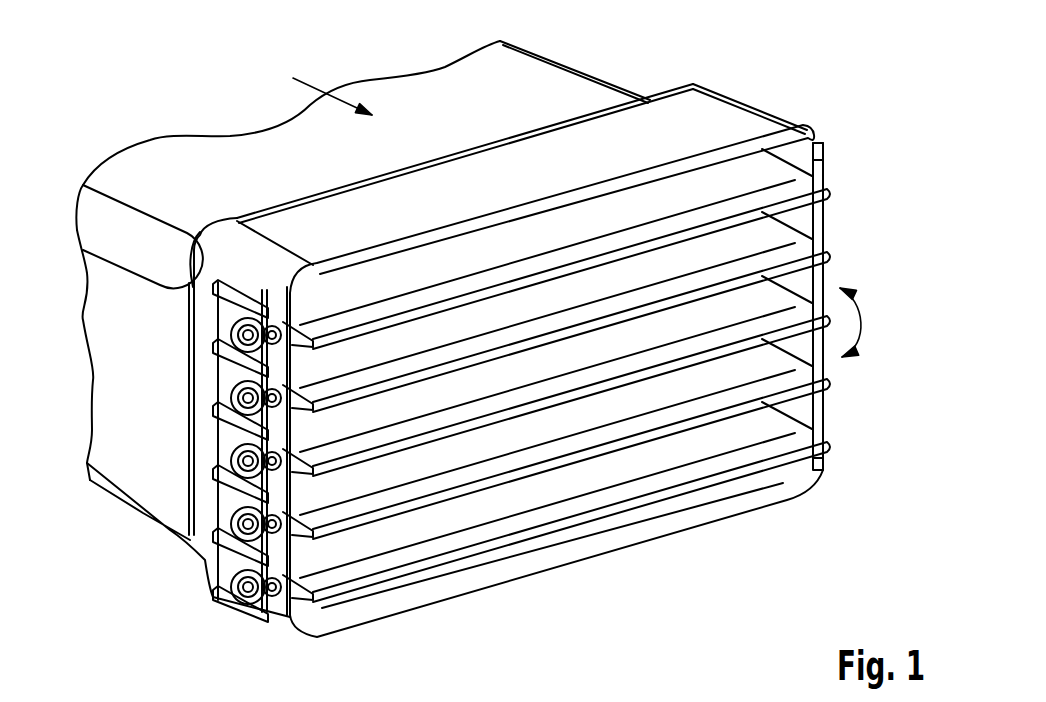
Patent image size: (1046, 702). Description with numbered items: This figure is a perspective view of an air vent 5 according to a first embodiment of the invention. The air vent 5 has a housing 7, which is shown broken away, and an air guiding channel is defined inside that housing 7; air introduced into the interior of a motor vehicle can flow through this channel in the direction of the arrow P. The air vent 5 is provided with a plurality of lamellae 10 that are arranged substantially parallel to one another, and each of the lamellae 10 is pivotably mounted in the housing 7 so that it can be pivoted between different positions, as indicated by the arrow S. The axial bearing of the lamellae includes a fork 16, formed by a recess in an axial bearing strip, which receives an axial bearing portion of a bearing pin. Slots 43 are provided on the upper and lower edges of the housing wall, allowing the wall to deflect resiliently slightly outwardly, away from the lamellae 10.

The air vent 5 is at (551, 597).
The housing 7 is at (565, 88).
The lamellae 10 is at (512, 373).
The fork 16 is at (300, 605).
The slots 43 is at (810, 143).
The arrow P is at (310, 83).
The arrow S is at (868, 322).